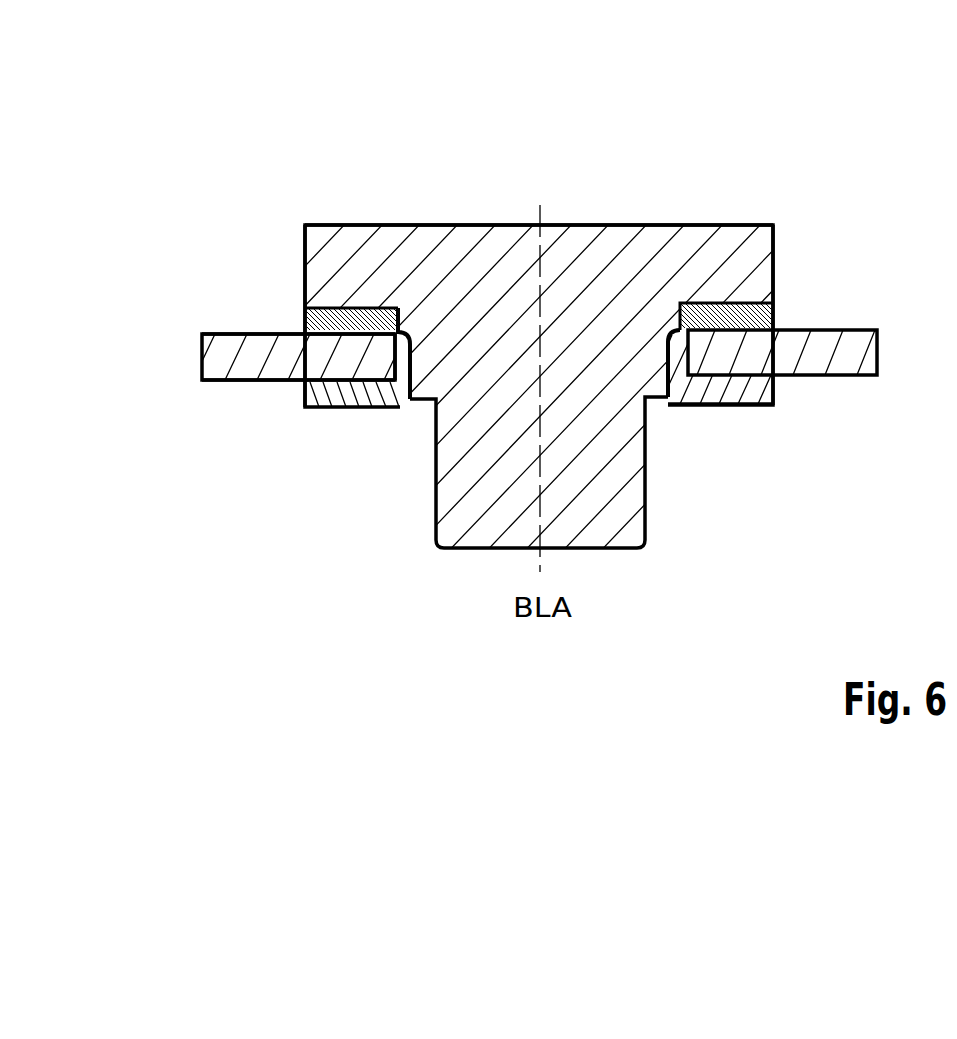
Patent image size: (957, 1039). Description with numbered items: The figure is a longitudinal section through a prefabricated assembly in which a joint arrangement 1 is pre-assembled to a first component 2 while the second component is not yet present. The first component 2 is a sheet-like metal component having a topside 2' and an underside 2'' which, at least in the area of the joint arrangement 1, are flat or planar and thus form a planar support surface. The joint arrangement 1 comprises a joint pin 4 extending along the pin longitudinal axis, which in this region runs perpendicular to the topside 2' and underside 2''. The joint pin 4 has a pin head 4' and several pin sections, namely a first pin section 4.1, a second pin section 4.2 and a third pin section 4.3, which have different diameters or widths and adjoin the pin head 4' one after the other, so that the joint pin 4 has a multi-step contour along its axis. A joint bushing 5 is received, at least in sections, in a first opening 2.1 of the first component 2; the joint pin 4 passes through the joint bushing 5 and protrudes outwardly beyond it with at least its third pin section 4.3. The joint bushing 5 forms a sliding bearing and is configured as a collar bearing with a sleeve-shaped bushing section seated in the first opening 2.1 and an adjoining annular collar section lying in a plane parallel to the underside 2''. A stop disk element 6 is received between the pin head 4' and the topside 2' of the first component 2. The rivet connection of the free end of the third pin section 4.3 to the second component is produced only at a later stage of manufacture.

The joint arrangement 1 is at (822, 158).
The first component 2 is at (248, 338).
The topside of the first component 2' is at (298, 290).
The underside of the first component 2'' is at (298, 436).
The first opening 2.1 is at (393, 374).
The joint pin 4 is at (478, 328).
The pin head 4' is at (495, 179).
The first pin section 4.1 is at (392, 306).
The second pin section 4.2 is at (402, 400).
The third pin section 4.3 is at (438, 504).
The joint bushing 5 is at (728, 407).
The stop disk element 6 is at (762, 317).